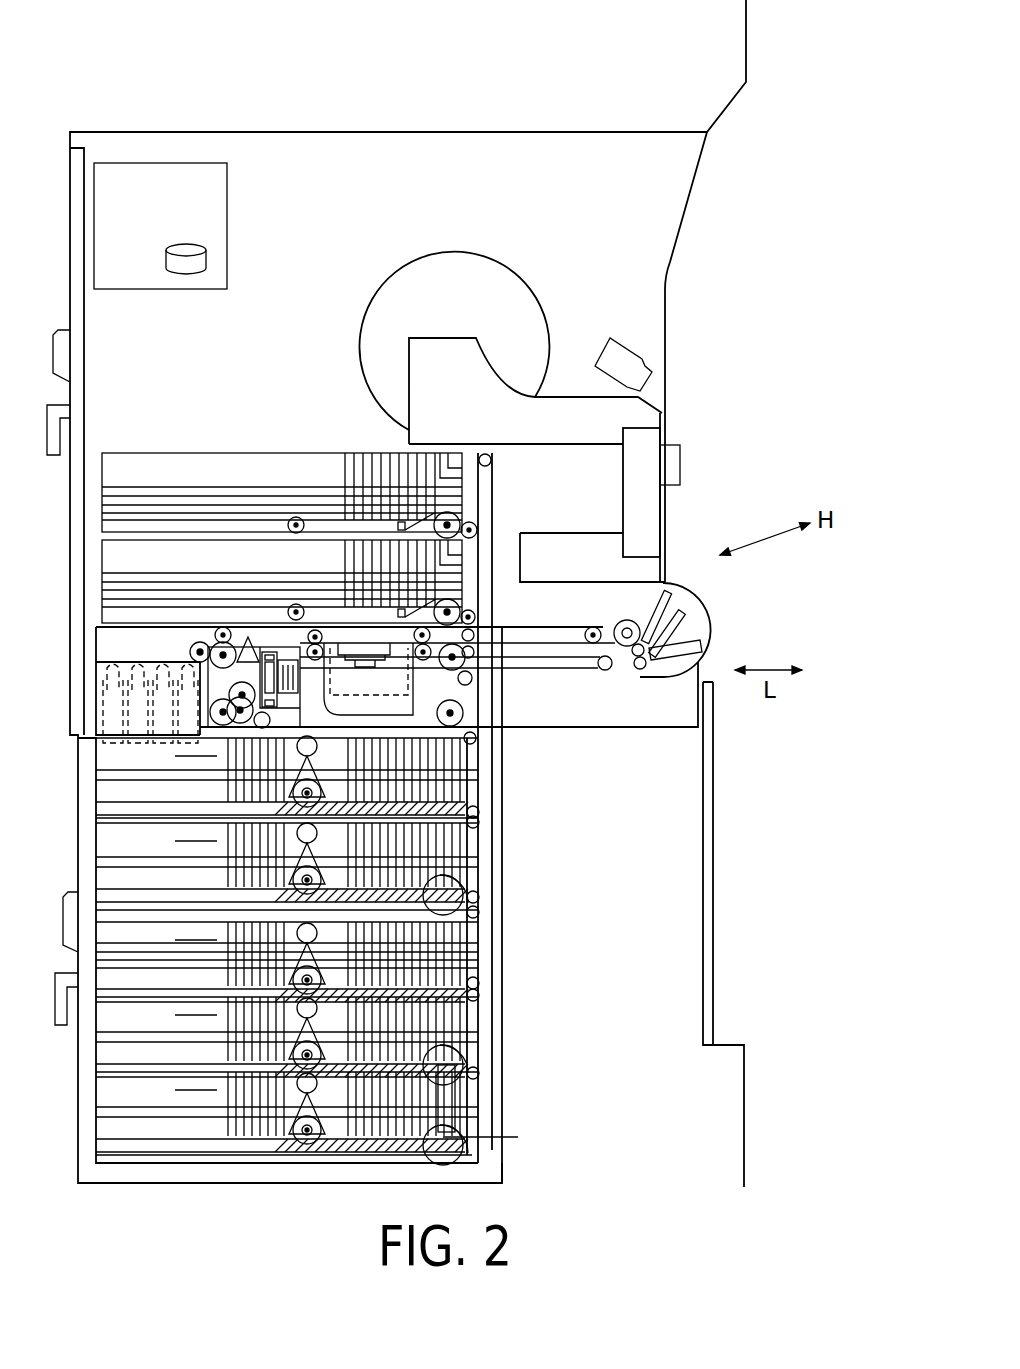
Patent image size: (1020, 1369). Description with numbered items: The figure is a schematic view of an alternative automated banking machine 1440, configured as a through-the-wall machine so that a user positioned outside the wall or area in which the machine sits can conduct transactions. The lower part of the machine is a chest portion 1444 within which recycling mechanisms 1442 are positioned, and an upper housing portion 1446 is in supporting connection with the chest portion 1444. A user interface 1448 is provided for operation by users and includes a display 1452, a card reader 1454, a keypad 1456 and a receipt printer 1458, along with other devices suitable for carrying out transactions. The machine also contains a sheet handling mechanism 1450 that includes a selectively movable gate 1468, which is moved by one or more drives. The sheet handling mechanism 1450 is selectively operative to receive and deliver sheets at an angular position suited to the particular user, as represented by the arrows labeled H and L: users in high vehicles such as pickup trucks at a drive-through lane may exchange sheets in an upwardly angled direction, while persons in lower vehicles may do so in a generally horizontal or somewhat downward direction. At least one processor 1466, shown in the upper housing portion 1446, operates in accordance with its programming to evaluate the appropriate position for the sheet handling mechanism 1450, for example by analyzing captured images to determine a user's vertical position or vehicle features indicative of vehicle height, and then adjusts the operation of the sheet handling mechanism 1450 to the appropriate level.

The upper housing portion 1446 is at (205, 88).
The processor 1466 is at (175, 209).
The receipt printer 1458 is at (530, 290).
The user interface 1448 is at (715, 333).
The keypad 1456 is at (682, 467).
The display 1452 is at (667, 527).
The card reader 1454 is at (643, 568).
The selectively movable gate 1468 is at (713, 633).
The sheet handling mechanism 1450 is at (668, 692).
The recycling mechanisms 1442 is at (468, 840).
The chest portion 1444 is at (505, 958).
The automated banking machine 1440 is at (552, 1068).